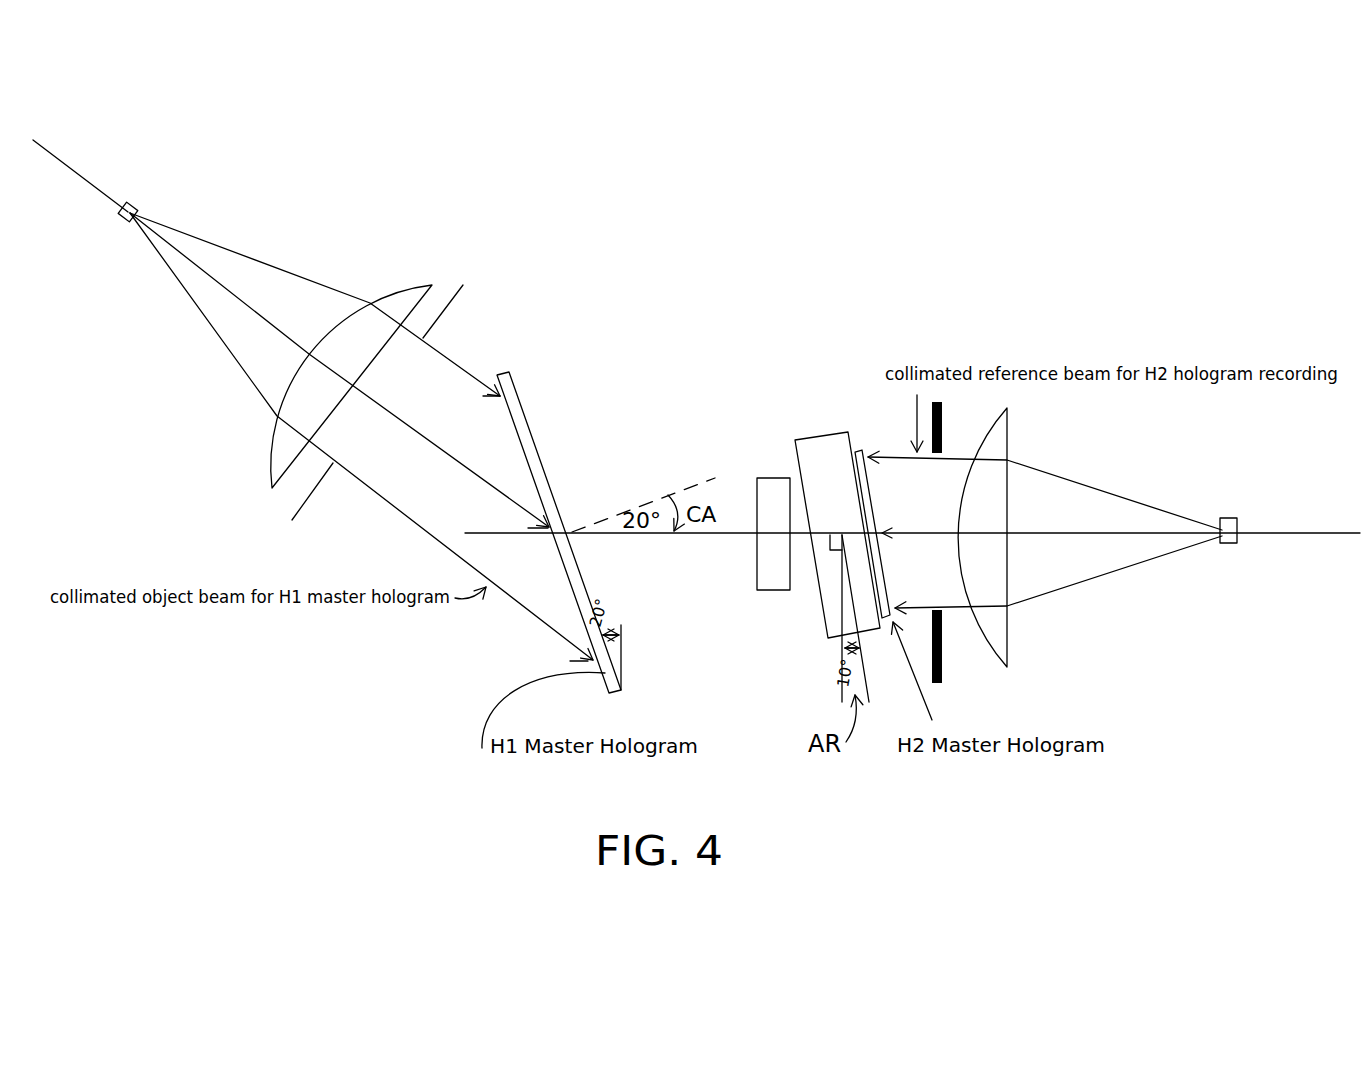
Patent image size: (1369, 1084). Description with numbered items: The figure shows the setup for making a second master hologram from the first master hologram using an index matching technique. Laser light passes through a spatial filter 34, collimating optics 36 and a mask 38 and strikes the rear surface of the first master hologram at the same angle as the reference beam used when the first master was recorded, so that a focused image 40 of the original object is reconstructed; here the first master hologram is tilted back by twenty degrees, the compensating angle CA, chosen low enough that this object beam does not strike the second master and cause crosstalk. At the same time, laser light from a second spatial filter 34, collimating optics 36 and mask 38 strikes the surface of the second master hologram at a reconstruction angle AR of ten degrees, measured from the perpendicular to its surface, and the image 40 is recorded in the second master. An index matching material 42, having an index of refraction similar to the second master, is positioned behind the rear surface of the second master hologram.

The spatial filter 34 is at (152, 180).
The collimating optics 36 is at (380, 303).
The mask 38 is at (290, 512).
The focused image 40 is at (752, 468).
The index matching material 42 is at (831, 433).